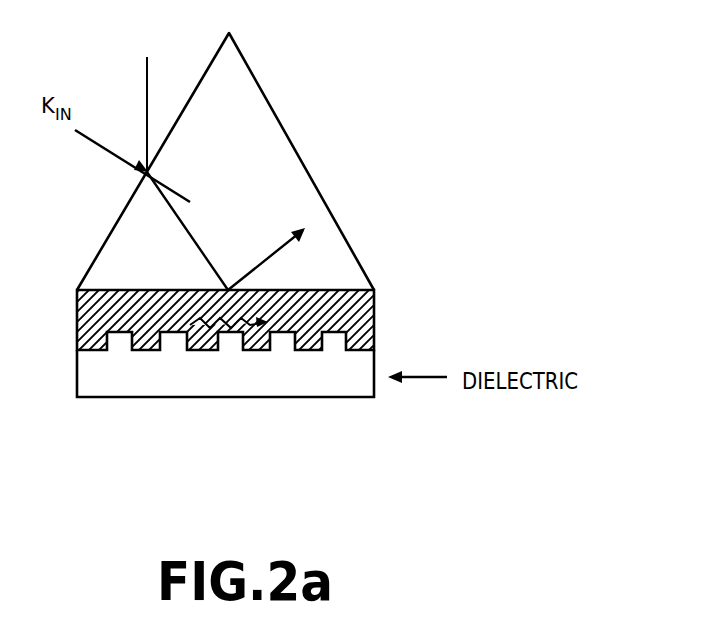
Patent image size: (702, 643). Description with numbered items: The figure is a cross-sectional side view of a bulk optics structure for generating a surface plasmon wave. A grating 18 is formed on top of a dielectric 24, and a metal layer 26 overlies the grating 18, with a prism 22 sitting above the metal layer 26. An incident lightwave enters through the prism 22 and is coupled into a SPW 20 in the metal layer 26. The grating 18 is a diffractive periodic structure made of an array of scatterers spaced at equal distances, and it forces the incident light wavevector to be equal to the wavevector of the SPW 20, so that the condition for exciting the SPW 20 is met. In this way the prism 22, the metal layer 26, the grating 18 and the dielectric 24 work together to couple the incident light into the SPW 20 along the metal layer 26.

The prism 22 is at (305, 162).
The metal layer 26 is at (374, 308).
The grating 18 is at (374, 335).
The SPW 20 is at (188, 333).
The dielectric 24 is at (358, 397).